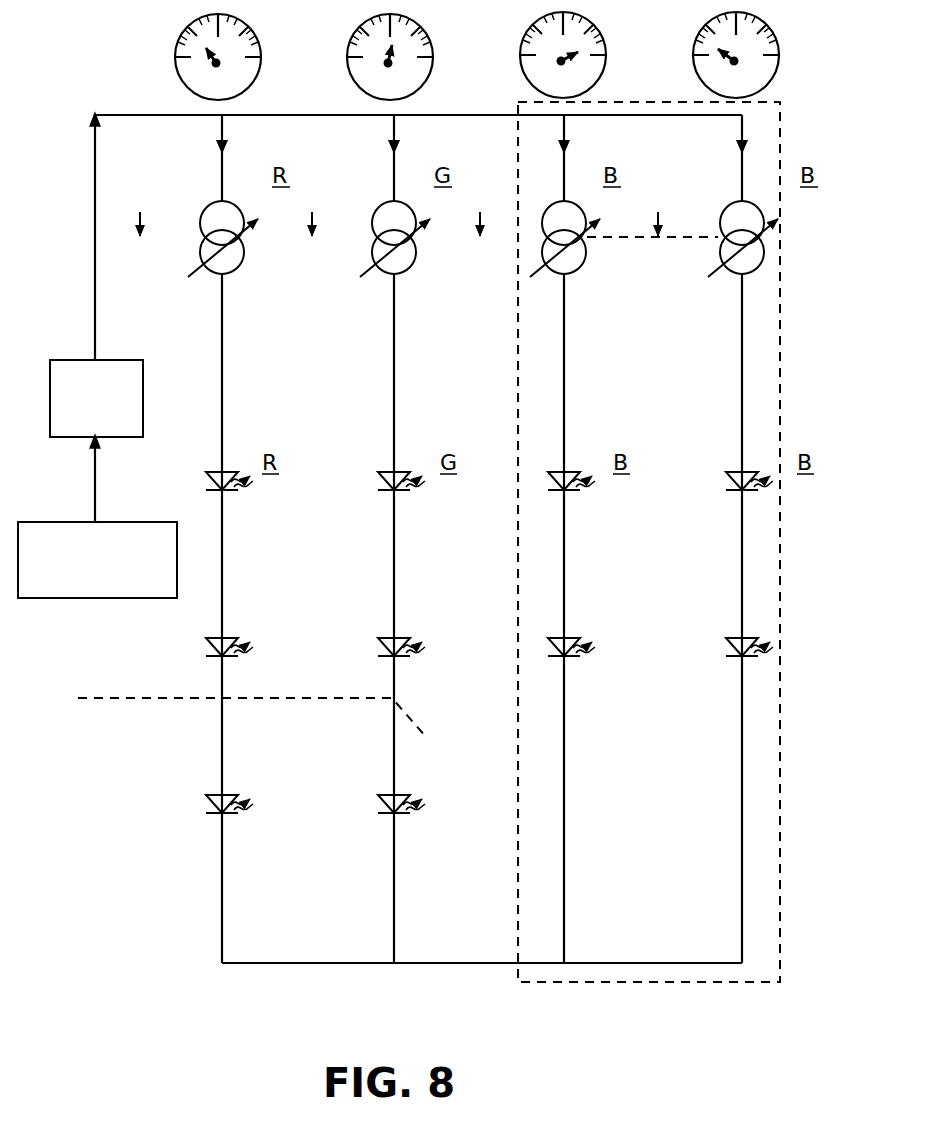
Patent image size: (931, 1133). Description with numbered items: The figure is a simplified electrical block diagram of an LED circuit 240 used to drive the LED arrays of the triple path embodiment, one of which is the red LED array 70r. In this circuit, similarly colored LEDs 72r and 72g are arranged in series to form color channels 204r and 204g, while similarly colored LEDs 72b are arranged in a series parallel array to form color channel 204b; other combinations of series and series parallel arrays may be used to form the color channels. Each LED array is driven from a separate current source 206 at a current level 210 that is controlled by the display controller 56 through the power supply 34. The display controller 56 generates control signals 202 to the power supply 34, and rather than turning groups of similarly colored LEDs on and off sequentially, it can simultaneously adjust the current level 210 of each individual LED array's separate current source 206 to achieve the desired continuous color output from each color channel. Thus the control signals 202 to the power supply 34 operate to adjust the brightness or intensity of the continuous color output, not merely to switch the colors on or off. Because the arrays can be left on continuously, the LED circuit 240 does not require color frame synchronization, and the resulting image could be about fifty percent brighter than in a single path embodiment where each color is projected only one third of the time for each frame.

The current level 210 is at (254, 26).
The current source 206 is at (409, 215).
The control signals 202 is at (92, 210).
The power supply 34 is at (113, 360).
The display controller 56 is at (133, 522).
The LED array 70r is at (318, 360).
The LEDs 72r is at (228, 476).
The LEDs 72g is at (400, 476).
The LEDs 72b is at (570, 476).
The color channel 204r is at (260, 616).
The color channel 204g is at (437, 616).
The color channel 204b is at (671, 573).
The LED circuit 240 is at (165, 908).